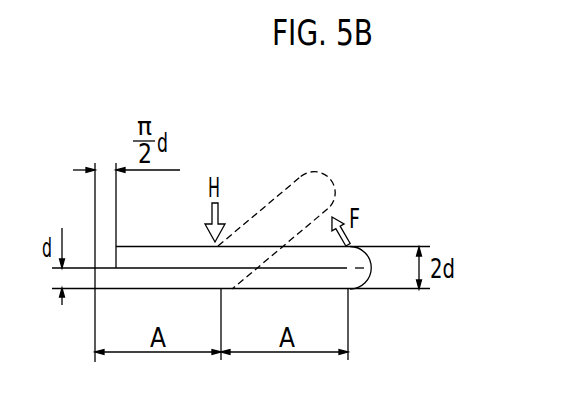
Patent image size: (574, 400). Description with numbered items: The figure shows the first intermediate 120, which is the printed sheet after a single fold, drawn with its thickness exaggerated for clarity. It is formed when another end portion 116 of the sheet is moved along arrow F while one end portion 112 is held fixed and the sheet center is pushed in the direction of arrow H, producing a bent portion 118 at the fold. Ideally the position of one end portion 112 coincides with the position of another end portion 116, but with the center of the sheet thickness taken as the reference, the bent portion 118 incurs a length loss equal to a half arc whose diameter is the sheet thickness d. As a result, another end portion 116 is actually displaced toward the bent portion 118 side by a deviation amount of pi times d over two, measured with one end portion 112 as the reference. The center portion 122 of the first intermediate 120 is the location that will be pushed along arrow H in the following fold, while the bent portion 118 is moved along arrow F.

The one end portion 112 is at (101, 279).
The another end portion 116 is at (125, 257).
The bent portion 118 is at (372, 268).
The first intermediate 120 is at (140, 110).
The center portion 122 is at (213, 258).